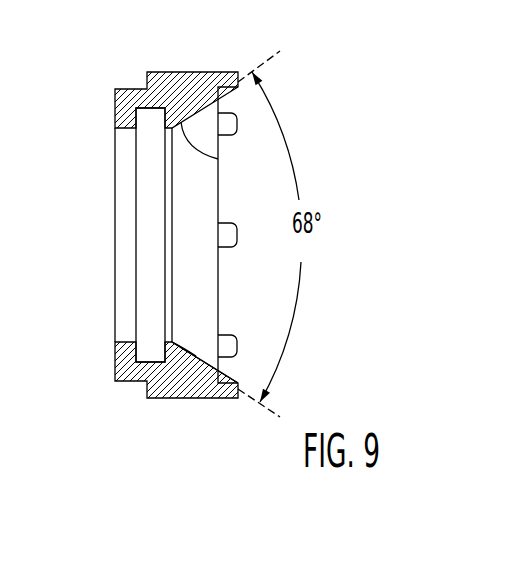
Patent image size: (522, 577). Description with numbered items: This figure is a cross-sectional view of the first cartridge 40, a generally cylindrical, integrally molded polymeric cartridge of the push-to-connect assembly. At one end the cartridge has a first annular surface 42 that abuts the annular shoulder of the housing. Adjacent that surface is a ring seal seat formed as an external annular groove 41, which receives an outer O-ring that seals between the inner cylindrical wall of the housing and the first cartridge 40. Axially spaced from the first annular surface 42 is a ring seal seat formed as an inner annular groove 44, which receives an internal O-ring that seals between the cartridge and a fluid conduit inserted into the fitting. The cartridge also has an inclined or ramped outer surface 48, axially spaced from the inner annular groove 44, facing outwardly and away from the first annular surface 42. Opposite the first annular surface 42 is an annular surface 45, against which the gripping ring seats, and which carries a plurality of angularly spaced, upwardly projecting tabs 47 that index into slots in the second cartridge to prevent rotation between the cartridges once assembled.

The first cartridge 40 is at (190, 425).
The external annular groove 41 is at (131, 382).
The first annular surface 42 is at (115, 110).
The inner annular groove 44 is at (153, 110).
The annular surface 45 is at (227, 381).
The tabs 47 is at (237, 122).
The ramped outer surface 48 is at (218, 158).